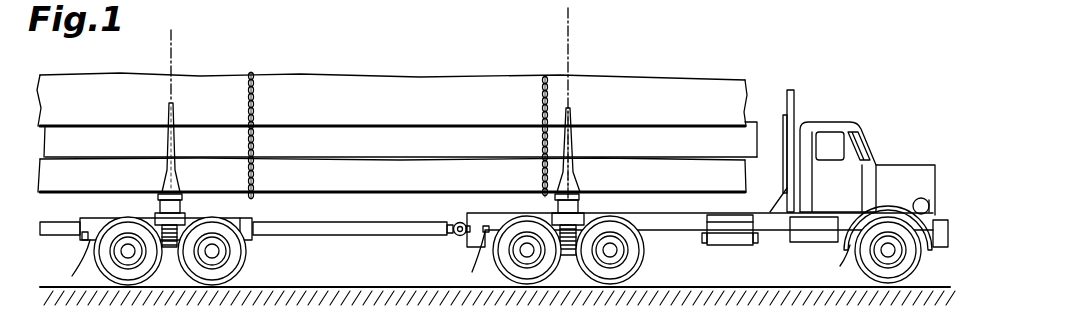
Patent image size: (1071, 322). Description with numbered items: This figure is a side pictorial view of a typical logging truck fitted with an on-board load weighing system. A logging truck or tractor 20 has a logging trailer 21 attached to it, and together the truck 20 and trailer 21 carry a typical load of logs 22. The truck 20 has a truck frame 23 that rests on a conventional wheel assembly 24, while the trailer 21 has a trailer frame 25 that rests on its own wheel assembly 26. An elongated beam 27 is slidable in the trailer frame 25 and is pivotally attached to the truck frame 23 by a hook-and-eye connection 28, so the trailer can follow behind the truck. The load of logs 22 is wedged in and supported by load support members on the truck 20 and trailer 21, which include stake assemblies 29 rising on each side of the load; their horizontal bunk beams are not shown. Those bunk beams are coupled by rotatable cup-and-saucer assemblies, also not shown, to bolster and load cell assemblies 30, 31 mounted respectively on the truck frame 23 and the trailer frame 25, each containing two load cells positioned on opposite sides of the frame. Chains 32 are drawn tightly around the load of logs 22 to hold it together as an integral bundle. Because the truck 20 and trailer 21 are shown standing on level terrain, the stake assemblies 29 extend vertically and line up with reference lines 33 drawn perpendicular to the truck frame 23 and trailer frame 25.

The logging truck 20 is at (707, 187).
The logging trailer 21 is at (366, 243).
The load of logs 22 is at (400, 101).
The truck frame 23 is at (660, 222).
The wheel assembly 24 is at (648, 285).
The trailer frame 25 is at (251, 219).
The wheel assembly 26 is at (171, 228).
The elongated beam 27 is at (394, 228).
The hook-and-eye connection 28 is at (455, 240).
The stake assemblies 29 is at (178, 121).
The bolster and load cell assembly 30 is at (582, 196).
The bolster and load cell assembly 31 is at (187, 206).
The chains 32 is at (256, 72).
The reference lines 33 is at (173, 38).